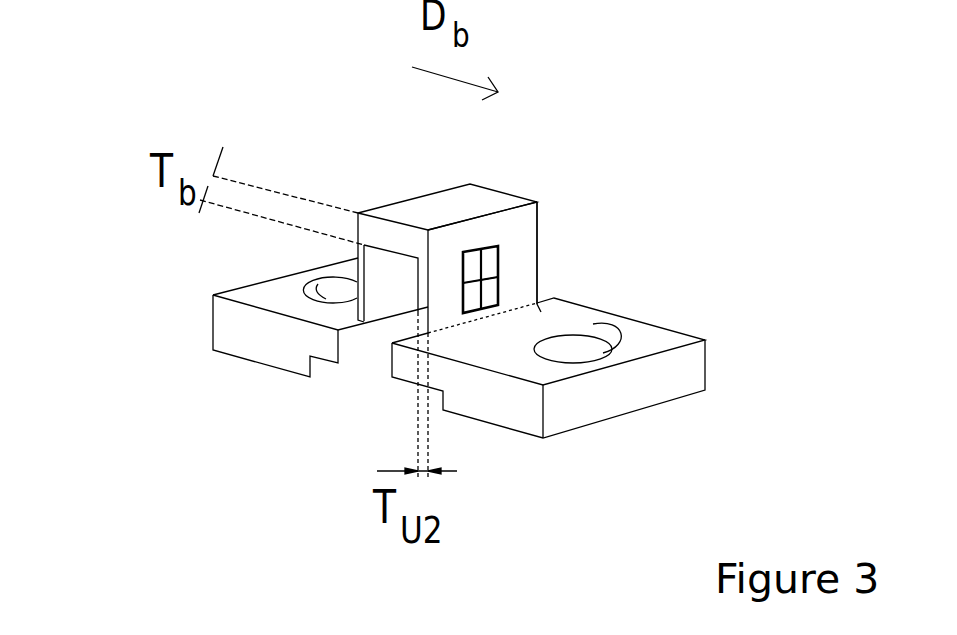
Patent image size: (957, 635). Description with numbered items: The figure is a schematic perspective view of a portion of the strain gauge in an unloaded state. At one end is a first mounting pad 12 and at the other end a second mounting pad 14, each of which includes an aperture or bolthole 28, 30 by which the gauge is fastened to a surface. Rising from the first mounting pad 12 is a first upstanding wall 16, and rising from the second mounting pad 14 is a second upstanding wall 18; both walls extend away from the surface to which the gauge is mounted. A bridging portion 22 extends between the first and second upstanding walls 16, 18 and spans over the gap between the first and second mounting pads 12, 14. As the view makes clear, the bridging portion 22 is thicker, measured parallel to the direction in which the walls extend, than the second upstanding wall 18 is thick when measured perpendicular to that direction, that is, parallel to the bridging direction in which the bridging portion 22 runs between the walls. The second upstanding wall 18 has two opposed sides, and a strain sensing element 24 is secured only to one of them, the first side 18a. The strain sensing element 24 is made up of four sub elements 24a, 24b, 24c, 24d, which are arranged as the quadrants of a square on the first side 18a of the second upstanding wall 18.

The first mounting pad 12 is at (242, 338).
The second mounting pad 14 is at (495, 400).
The first upstanding wall 16 is at (355, 259).
The second upstanding wall 18 is at (525, 249).
The first side of the second upstanding wall 18a is at (523, 291).
The bridging portion 22 is at (458, 212).
The strain sensing element 24 is at (473, 272).
The sub element 24a is at (462, 262).
The sub element 24b is at (493, 262).
The sub element 24c is at (490, 298).
The sub element 24d is at (500, 285).
The aperture or bolthole 28 is at (328, 298).
The aperture or bolthole 30 is at (593, 324).